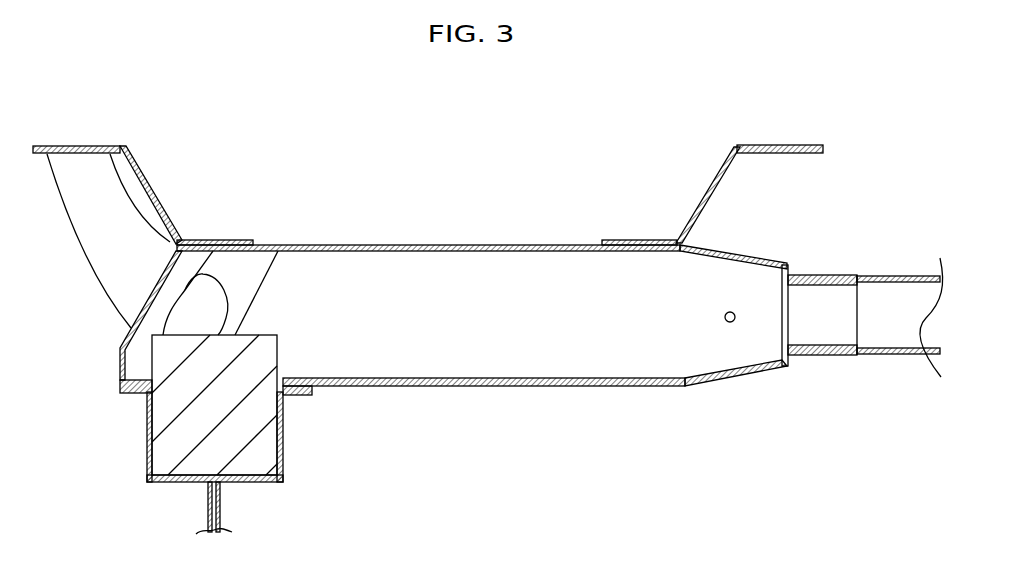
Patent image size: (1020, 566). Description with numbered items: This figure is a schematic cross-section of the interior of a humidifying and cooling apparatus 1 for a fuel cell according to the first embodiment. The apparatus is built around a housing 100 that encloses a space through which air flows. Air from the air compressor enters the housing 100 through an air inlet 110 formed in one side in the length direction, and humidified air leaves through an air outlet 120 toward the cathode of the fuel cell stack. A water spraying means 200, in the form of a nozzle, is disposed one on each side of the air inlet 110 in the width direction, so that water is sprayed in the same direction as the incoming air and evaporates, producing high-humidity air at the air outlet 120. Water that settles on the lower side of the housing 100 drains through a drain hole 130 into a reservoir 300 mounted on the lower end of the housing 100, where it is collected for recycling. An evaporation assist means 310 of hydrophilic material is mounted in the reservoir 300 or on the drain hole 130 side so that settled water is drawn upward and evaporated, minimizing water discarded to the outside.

The humidifying and cooling apparatus for a fuel cell 1 is at (524, 158).
The housing 100 is at (483, 387).
The air inlet 110 is at (827, 355).
The air outlet 120 is at (188, 298).
The drain hole 130 is at (297, 395).
The water spraying means 200 is at (730, 311).
The reservoir 300 is at (263, 477).
The evaporation assist means 310 is at (168, 448).